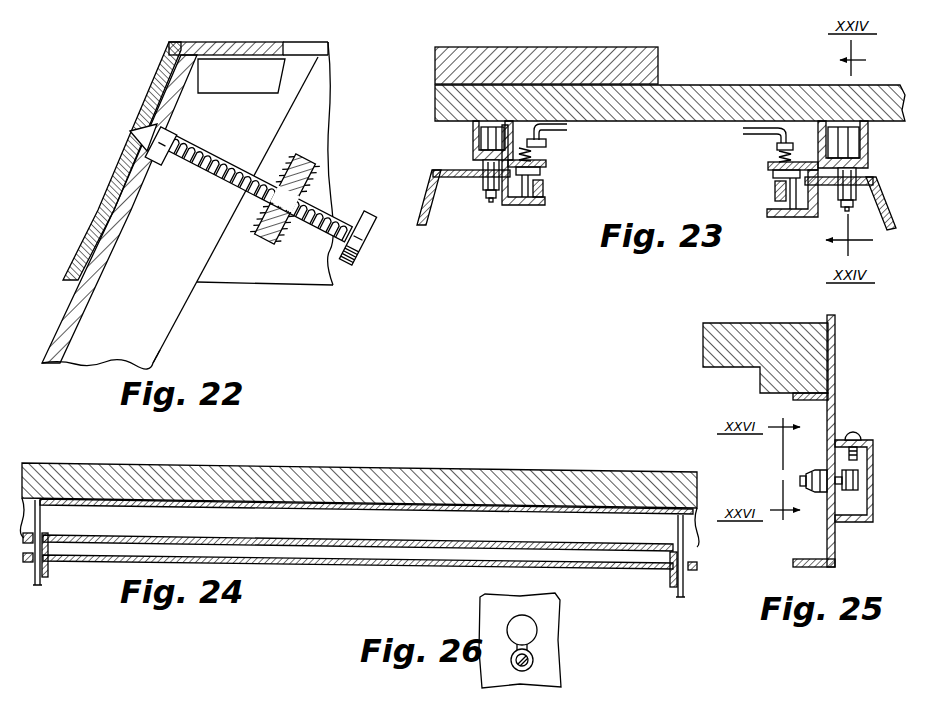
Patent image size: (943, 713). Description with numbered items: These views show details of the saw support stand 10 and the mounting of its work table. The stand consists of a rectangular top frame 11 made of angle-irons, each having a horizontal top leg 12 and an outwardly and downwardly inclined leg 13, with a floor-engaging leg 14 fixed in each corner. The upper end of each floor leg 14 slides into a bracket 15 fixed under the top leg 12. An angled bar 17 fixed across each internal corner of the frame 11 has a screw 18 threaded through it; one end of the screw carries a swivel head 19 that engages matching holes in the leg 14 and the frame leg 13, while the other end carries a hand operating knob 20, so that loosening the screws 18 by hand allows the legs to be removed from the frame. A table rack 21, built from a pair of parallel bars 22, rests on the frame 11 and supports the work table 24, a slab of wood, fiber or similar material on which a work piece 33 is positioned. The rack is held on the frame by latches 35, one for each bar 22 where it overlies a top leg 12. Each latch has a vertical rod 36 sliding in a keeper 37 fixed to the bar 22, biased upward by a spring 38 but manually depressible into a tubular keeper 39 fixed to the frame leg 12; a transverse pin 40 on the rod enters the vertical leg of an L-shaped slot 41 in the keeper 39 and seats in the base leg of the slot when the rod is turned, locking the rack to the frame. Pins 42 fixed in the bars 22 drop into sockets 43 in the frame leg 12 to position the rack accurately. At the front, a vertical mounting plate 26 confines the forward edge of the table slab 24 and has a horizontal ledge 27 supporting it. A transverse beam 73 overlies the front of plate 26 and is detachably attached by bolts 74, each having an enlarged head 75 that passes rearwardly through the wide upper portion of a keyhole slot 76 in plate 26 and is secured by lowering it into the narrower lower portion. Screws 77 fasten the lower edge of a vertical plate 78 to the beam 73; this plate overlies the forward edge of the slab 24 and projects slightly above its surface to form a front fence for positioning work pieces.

In FIG. 23, the support stand 10 is at (424, 193).
In FIG. 24, the support stand 10 is at (364, 570).
In FIG. 22, the top frame 11 is at (106, 186).
In FIG. 24, the top frame 11 is at (417, 569).
In FIG. 22, the top leg 12 is at (243, 43).
In FIG. 23, the top leg 12 is at (441, 171).
In FIG. 24, the top leg 12 is at (322, 570).
In FIG. 22, the inclined leg 13 is at (125, 158).
In FIG. 23, the inclined leg 13 is at (421, 227).
In FIG. 22, the floor-engaging leg 14 is at (158, 348).
In FIG. 22, the bracket 15 is at (186, 84).
In FIG. 22, the angled bar 17 is at (276, 232).
In FIG. 22, the screw 18 is at (346, 214).
In FIG. 22, the swivel head 19 is at (161, 162).
In FIG. 22, the hand operating knob 20 is at (362, 244).
In FIG. 23, the table rack 21 is at (470, 148).
In FIG. 24, the table rack 21 is at (272, 548).
In FIG. 23, the bar 22 is at (471, 129).
In FIG. 24, the bar 22 is at (95, 544).
In FIG. 23, the work table 24 is at (756, 87).
In FIG. 24, the work table 24 is at (306, 464).
In FIG. 25, the work table 24 is at (744, 323).
In FIG. 25, the mounting plate 26 is at (836, 562).
In FIG. 26, the mounting plate 26 is at (553, 680).
In FIG. 25, the horizontal ledge 27 is at (813, 398).
In FIG. 23, the work piece 33 is at (577, 47).
In FIG. 23, the latch 35 is at (553, 166).
In FIG. 23, the vertical rod 36 is at (774, 183).
In FIG. 23, the keeper 37 is at (768, 166).
In FIG. 23, the spring 38 is at (777, 150).
In FIG. 23, the tubular keeper 39 is at (796, 213).
In FIG. 23, the transverse pin 40 is at (774, 198).
In FIG. 23, the L-shaped slot 41 is at (773, 190).
In FIG. 23, the pin 42 is at (489, 201).
In FIG. 24, the pin 42 is at (40, 587).
In FIG. 24, the socket 43 is at (33, 580).
In FIG. 25, the beam 73 is at (868, 522).
In FIG. 25, the bolt 74 is at (859, 481).
In FIG. 25, the enlarged head 75 is at (800, 483).
In FIG. 26, the enlarged head 75 is at (533, 660).
In FIG. 25, the keyhole slot 76 is at (827, 450).
In FIG. 26, the keyhole slot 76 is at (540, 629).
In FIG. 25, the screw 77 is at (860, 434).
In FIG. 25, the plate 78 is at (836, 400).